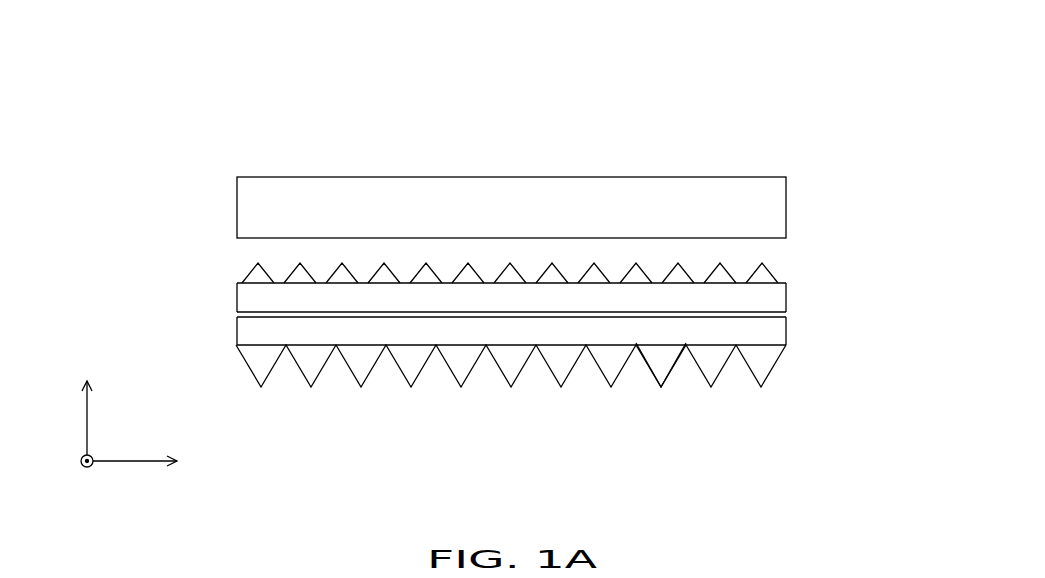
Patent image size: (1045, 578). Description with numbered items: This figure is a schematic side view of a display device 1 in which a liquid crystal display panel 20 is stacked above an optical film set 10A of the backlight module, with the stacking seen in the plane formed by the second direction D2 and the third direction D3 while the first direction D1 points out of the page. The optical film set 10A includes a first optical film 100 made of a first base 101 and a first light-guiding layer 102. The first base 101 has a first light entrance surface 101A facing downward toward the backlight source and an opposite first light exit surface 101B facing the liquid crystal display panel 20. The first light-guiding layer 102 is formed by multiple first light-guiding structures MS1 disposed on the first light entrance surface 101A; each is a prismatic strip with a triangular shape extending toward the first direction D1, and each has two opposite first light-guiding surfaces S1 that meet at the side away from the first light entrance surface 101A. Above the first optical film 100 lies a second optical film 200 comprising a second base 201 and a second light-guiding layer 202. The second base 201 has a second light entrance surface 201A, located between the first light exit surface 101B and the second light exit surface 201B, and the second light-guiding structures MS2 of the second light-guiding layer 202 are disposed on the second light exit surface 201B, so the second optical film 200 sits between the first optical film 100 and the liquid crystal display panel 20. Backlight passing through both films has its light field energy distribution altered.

The display device 1 is at (938, 438).
The optical film set 10A is at (120, 28).
The liquid crystal display panel 20 is at (779, 205).
The first optical film 100 is at (168, 12).
The first base 101 is at (220, 337).
The first light-guiding layer 102 is at (220, 371).
The first light entrance surface 101A is at (737, 345).
The first light exit surface 101B is at (748, 319).
The first light-guiding structure MS1 is at (768, 375).
The second optical film 200 is at (168, 103).
The second base 201 is at (248, 298).
The second light-guiding layer 202 is at (248, 275).
The second light entrance surface 201A is at (760, 312).
The second light exit surface 201B is at (744, 285).
The second light-guiding structure MS2 is at (770, 270).
The first light-guiding surface S1 is at (649, 366).
The first direction D1 is at (76, 476).
The second direction D2 is at (150, 461).
The third direction D3 is at (88, 403).